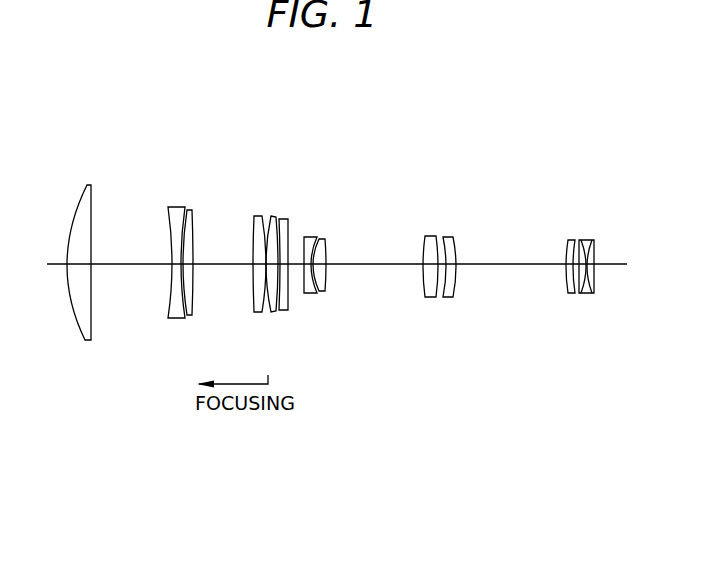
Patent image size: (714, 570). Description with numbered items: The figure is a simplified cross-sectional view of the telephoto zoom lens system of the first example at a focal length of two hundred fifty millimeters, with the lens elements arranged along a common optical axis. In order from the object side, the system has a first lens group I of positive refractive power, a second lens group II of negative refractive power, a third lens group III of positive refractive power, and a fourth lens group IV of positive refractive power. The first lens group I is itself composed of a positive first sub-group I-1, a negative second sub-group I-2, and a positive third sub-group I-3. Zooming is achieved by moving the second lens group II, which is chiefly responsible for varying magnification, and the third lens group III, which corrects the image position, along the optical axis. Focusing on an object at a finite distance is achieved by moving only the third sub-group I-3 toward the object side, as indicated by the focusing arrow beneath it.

The first lens group I is at (42, 165).
The first sub-group I-1 is at (97, 340).
The second sub-group I-2 is at (159, 319).
The third sub-group I-3 is at (292, 320).
The second lens group II is at (298, 294).
The third lens group III is at (417, 298).
The fourth lens group IV is at (602, 299).